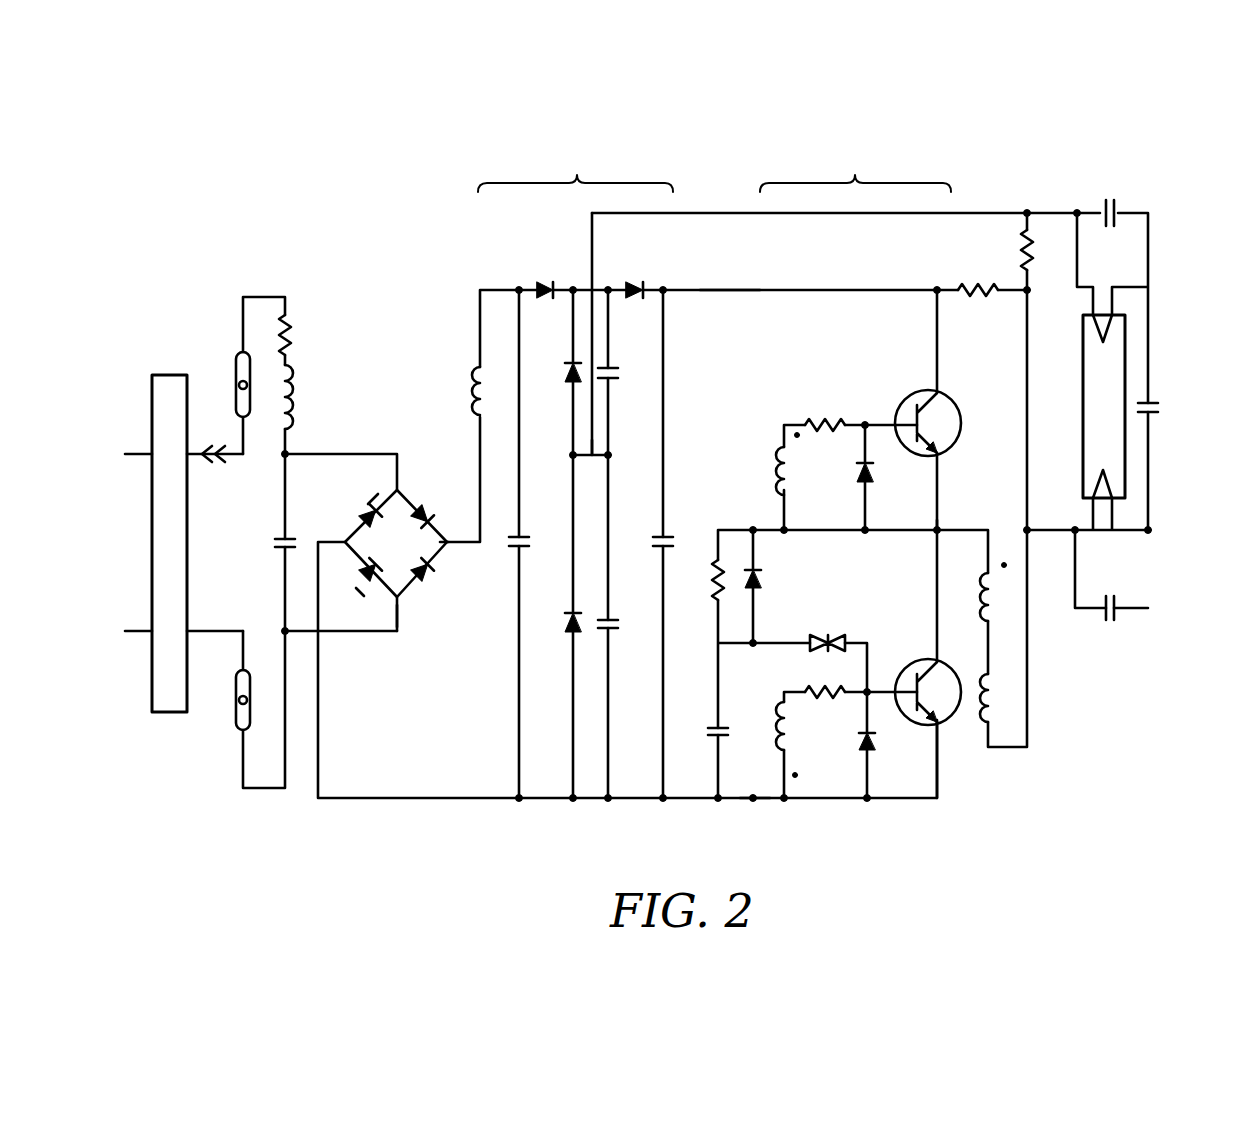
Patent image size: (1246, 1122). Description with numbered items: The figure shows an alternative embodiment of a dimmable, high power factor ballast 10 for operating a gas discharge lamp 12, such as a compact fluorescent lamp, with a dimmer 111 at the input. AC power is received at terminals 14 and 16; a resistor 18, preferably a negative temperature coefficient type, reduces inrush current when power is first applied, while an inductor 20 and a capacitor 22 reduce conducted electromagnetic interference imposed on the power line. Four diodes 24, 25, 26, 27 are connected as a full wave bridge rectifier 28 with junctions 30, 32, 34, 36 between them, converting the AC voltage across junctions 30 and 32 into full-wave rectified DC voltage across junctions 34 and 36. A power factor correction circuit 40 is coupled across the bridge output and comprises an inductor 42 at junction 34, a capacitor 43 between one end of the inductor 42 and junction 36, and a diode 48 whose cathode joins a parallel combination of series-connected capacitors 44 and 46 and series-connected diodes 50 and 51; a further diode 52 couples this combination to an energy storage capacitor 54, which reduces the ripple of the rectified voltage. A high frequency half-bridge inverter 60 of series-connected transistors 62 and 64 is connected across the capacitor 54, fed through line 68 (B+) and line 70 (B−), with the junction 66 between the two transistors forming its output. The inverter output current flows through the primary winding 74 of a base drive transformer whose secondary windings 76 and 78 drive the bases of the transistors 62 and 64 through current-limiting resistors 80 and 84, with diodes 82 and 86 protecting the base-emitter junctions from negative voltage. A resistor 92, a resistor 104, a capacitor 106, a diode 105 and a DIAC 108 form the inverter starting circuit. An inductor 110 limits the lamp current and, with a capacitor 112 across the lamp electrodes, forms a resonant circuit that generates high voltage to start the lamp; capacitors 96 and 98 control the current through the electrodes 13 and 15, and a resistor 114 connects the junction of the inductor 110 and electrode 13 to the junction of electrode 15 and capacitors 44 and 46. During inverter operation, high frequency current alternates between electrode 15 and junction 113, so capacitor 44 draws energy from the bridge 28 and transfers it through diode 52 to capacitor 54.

The ballast 10 is at (916, 116).
The gas discharge lamp 12 is at (1082, 454).
The electrode 13 is at (1082, 492).
The terminal 14 is at (236, 376).
The electrode 15 is at (1084, 342).
The terminal 16 is at (236, 704).
The resistor 18 is at (290, 335).
The inductor 20 is at (292, 401).
The capacitor 22 is at (280, 538).
The diode 24 is at (370, 580).
The diode 25 is at (422, 582).
The diode 26 is at (416, 498).
The diode 27 is at (365, 515).
The full wave bridge rectifier 28 is at (383, 556).
The junction 30 is at (396, 622).
The junction 32 is at (375, 480).
The junction 34 is at (446, 547).
The junction 36 is at (337, 538).
The power factor correction circuit 40 is at (575, 164).
The inductor 42 is at (474, 370).
The capacitor 43 is at (522, 534).
The capacitor 44 is at (614, 385).
The capacitor 46 is at (614, 632).
The diode 48 is at (538, 282).
The diode 50 is at (568, 420).
The diode 51 is at (567, 634).
The diode 52 is at (632, 280).
The energy storage capacitor 54 is at (667, 532).
The half-bridge inverter 60 is at (855, 164).
The transistor 62 is at (916, 402).
The transistor 64 is at (916, 662).
The junction 66 is at (938, 530).
The line 68 is at (756, 290).
The line 70 is at (752, 800).
The primary winding 74 is at (976, 612).
The secondary winding 76 is at (782, 454).
The secondary winding 78 is at (780, 728).
The resistor 80 is at (822, 416).
The diode 82 is at (858, 470).
The resistor 84 is at (830, 693).
The diode 86 is at (871, 744).
The resistor 92 is at (984, 294).
The capacitor 96 is at (1126, 614).
The capacitor 98 is at (1116, 208).
The resistor 104 is at (718, 600).
The diode 105 is at (760, 588).
The capacitor 106 is at (716, 732).
The DIAC 108 is at (842, 634).
The inductor 110 is at (987, 728).
The dimmer 111 is at (152, 710).
The capacitor 112 is at (1150, 404).
The junction 113 is at (598, 456).
The resistor 114 is at (1028, 226).